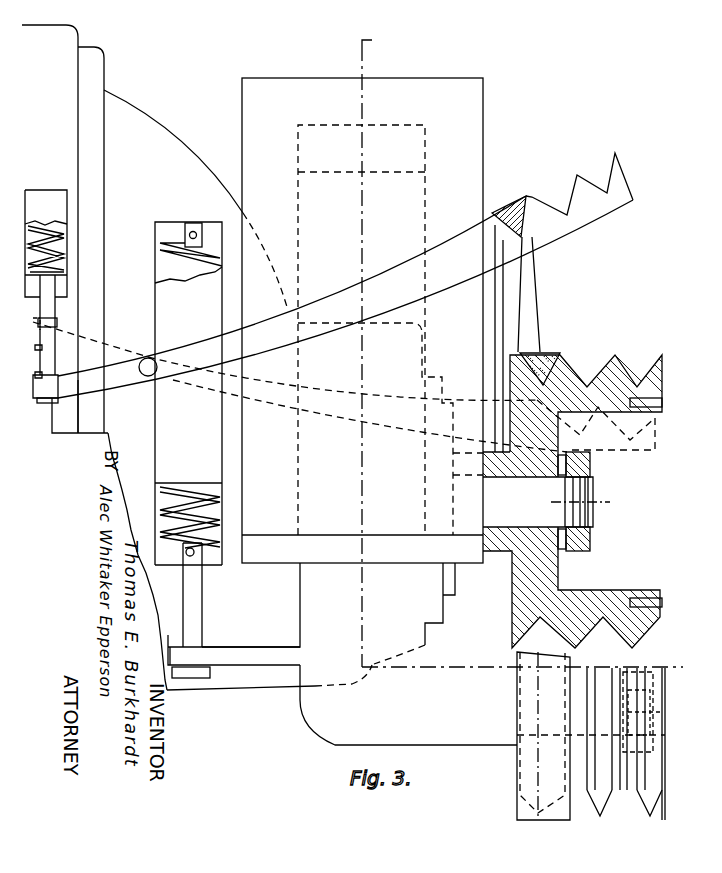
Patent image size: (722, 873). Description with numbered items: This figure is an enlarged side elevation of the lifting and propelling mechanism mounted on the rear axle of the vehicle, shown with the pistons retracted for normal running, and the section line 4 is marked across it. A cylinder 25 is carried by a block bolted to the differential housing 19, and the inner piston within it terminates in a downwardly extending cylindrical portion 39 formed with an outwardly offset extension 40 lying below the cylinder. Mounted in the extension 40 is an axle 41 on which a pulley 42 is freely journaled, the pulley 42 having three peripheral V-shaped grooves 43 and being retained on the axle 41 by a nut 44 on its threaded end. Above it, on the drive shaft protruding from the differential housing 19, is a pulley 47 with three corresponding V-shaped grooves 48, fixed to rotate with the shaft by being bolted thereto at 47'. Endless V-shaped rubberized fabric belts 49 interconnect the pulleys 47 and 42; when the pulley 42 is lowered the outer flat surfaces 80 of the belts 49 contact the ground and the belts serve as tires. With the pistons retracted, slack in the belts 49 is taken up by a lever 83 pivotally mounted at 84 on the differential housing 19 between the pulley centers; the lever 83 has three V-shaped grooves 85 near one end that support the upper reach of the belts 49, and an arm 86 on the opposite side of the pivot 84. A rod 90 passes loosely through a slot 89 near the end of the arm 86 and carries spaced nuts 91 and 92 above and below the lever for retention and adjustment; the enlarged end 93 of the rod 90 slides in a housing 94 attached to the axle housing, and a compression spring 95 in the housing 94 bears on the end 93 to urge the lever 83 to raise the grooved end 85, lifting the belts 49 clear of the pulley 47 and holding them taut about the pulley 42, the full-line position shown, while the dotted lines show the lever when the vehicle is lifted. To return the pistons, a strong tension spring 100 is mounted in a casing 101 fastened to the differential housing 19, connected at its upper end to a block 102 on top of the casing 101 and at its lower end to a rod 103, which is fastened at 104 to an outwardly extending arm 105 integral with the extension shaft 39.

The section line 4- 4 is at (529, 354).
The differential housing 19 is at (152, 145).
The cylinder 25 is at (483, 87).
The cylindrical portion 39 is at (337, 670).
The outwardly offset extension 40 is at (440, 740).
The axle 41 is at (533, 733).
The pulley 42 is at (665, 767).
The V-shaped grooves 43 is at (652, 670).
The nut 44 is at (655, 722).
The pulley 47 is at (664, 489).
The bolt 47' is at (627, 503).
The V-shaped grooves 48 is at (625, 362).
The belts 49 is at (502, 208).
The outer flat surfaces 80 is at (492, 213).
The lever 83 is at (635, 190).
The pivot 84 is at (147, 376).
The V-shaped grooves 85 is at (527, 197).
The arm 86 is at (88, 338).
The slot 89 is at (58, 400).
The rod 90 is at (48, 305).
The nut 91 is at (57, 322).
The nut 92 is at (108, 433).
The enlarged end 93 is at (62, 270).
The housing 94 is at (67, 199).
The compression spring 95 is at (60, 249).
The tension spring 100 is at (157, 483).
The casing 101 is at (157, 503).
The block 102 is at (186, 231).
The rod 103 is at (170, 693).
The fastening 104 is at (205, 678).
The arm 105 is at (273, 655).